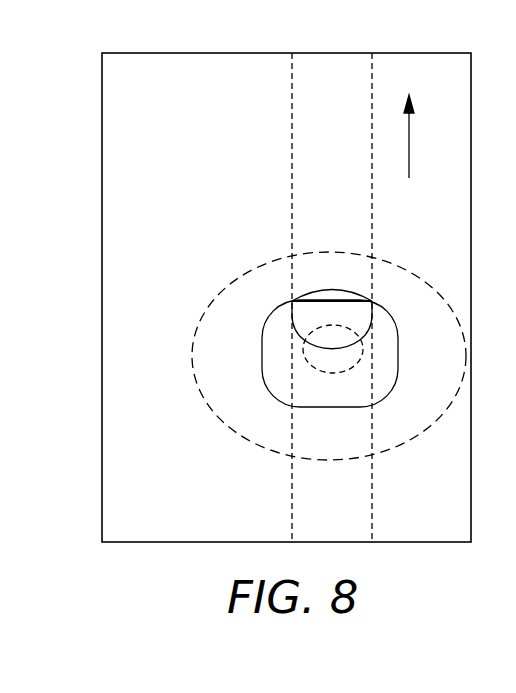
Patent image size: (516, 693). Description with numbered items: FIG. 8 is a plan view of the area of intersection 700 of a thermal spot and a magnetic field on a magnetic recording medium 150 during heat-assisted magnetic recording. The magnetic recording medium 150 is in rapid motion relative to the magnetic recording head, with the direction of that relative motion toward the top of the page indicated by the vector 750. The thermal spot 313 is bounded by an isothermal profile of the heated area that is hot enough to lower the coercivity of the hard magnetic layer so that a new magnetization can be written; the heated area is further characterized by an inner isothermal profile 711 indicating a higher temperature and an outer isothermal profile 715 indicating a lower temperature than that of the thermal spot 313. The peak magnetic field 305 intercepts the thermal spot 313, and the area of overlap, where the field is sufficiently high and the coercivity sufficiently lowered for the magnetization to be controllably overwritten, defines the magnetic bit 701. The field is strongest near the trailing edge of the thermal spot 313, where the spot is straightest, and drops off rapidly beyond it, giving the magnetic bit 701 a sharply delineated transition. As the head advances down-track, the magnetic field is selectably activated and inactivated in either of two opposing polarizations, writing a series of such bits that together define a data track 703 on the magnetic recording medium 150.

The magnetic recording medium 150 is at (162, 185).
The area of intersection 700 is at (124, 250).
The data track 703 is at (280, 143).
The vector 750 is at (432, 136).
The isothermal profile 715 is at (224, 436).
The thermal spot 313 is at (252, 359).
The peak magnetic field 305 is at (303, 283).
The magnetic bit 701 is at (286, 338).
The isothermal profile 711 is at (296, 369).